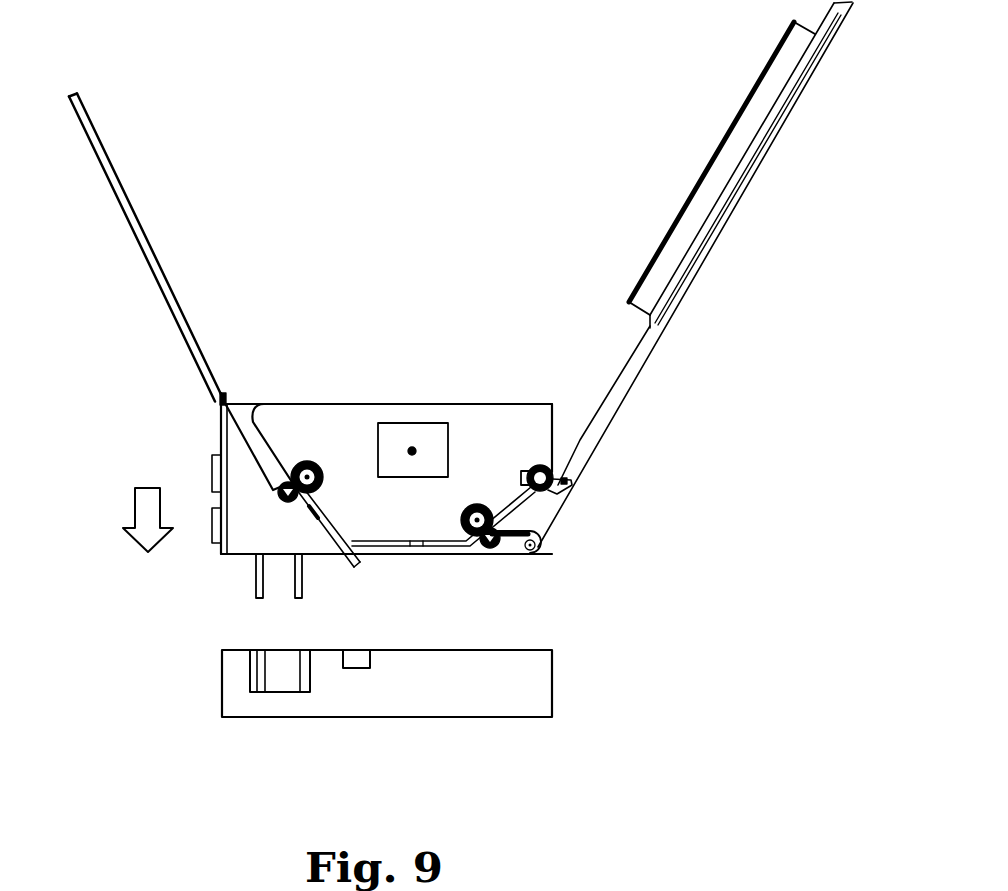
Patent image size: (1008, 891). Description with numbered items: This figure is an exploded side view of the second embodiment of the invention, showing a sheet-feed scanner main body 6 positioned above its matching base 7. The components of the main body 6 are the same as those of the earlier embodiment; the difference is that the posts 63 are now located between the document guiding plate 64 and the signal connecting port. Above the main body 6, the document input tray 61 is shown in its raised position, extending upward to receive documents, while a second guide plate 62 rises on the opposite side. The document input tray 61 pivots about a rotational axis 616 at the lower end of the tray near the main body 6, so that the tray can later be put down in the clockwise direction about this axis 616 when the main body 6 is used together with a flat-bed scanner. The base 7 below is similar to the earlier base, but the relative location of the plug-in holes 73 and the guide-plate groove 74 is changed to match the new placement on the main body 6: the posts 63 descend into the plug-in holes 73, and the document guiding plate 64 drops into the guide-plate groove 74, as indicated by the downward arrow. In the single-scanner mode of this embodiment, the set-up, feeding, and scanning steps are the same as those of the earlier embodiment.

The main body 6 is at (399, 393).
The document input tray 61 is at (740, 159).
The paper guide door 62 is at (127, 217).
The posts 63 is at (258, 582).
The document guiding plate 64 is at (355, 568).
The rotational axis 616 is at (537, 550).
The base 7 is at (554, 682).
The plug-in holes 73 is at (258, 668).
The guide-plate groove 74 is at (360, 660).